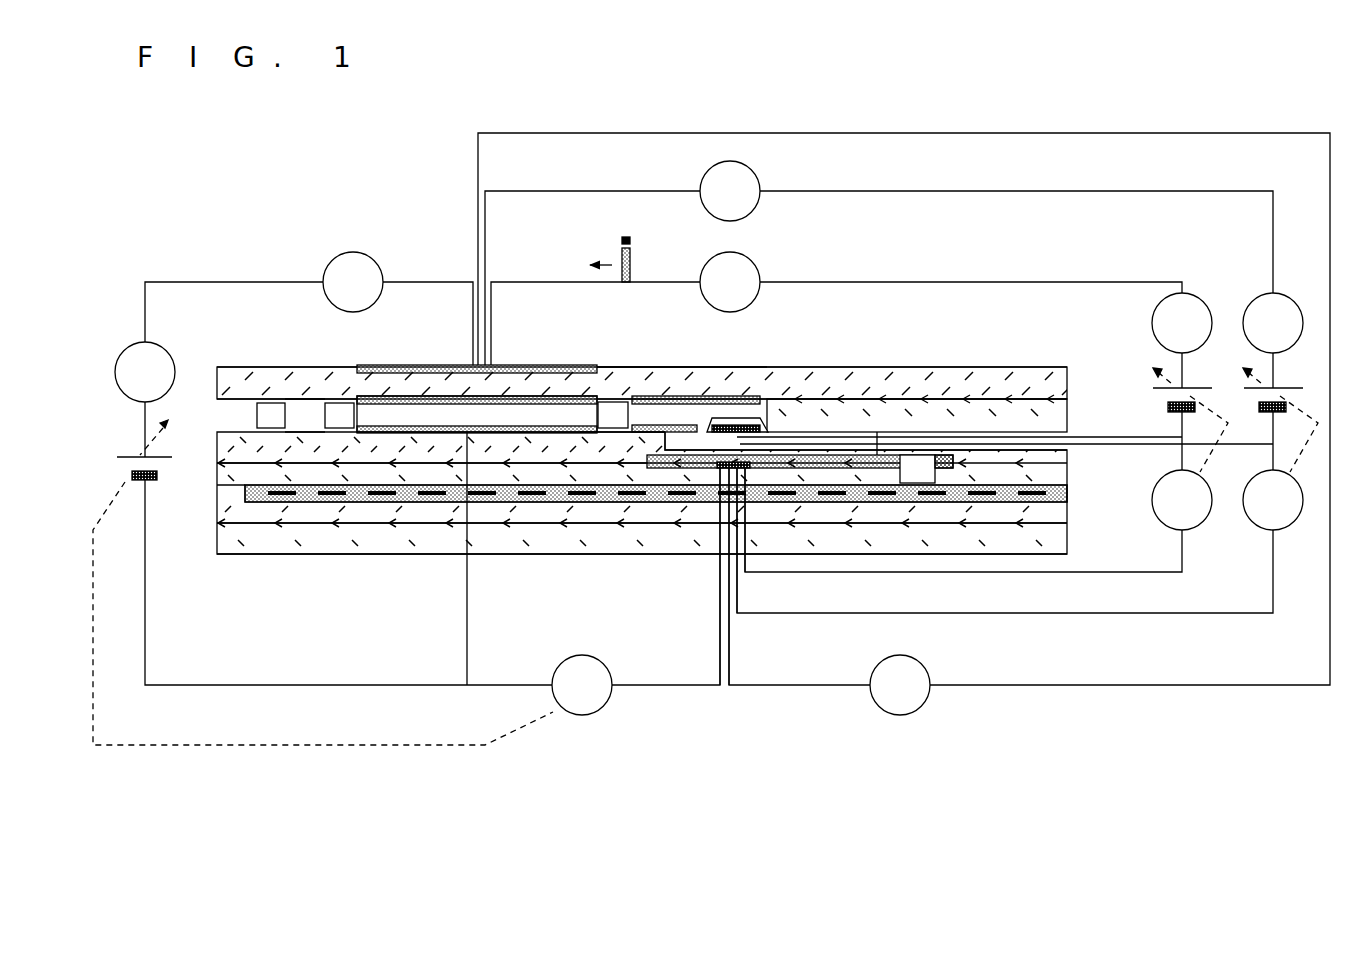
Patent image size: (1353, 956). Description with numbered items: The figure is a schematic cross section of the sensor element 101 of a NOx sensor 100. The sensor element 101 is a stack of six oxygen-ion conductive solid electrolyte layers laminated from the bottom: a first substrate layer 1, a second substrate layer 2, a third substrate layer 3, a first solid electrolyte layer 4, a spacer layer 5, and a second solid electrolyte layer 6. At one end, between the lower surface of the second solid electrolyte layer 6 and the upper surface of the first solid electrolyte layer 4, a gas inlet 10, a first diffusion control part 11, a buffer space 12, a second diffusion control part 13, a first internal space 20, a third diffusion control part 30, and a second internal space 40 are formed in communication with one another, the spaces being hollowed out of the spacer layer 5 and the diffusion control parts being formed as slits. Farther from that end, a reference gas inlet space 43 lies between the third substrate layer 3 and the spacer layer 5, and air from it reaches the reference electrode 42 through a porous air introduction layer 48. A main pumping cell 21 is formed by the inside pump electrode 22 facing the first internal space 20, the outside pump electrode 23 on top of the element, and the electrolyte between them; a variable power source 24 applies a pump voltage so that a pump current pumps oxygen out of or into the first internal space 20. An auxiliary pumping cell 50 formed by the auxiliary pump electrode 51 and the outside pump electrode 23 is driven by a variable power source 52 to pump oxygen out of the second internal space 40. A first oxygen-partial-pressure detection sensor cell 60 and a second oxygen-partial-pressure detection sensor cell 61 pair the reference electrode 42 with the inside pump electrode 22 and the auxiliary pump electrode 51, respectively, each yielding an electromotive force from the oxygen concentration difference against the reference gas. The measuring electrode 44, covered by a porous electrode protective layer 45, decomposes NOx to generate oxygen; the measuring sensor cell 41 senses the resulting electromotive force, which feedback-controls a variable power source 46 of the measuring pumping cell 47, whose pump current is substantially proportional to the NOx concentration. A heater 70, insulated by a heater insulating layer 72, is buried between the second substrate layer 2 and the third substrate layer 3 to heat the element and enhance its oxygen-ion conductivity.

The first substrate layer 1 is at (230, 542).
The second substrate layer 2 is at (230, 510).
The third substrate layer 3 is at (232, 480).
The first solid electrolyte layer 4 is at (230, 447).
The spacer layer 5 is at (1067, 421).
The second solid electrolyte layer 6 is at (1067, 384).
The gas inlet 10 is at (230, 412).
The first diffusion control part 11 is at (270, 412).
The buffer space 12 is at (305, 412).
The second diffusion control part 13 is at (343, 412).
The first internal space 20 is at (383, 412).
The main pumping cell 21 is at (593, 384).
The inside pump electrode 22 is at (420, 426).
The outside pump electrode 23 is at (525, 365).
The variable power source 24 is at (128, 467).
The third diffusion control part 30 is at (614, 402).
The second internal space 40 is at (686, 425).
The measuring sensor cell 41 is at (712, 440).
The reference electrode 42 is at (720, 470).
The reference gas inlet space 43 is at (1053, 455).
The measuring electrode 44 is at (745, 418).
The electrode protective layer 45 is at (720, 418).
The variable power source 46 is at (1196, 388).
The measuring pumping cell 47 is at (781, 383).
The air introduction layer 48 is at (843, 468).
The auxiliary pumping cell 50 is at (641, 384).
The auxiliary pump electrode 51 is at (657, 396).
The variable power source 52 is at (1286, 388).
The first oxygen-partial-pressure detection sensor cell 60 is at (600, 447).
The second oxygen-partial-pressure detection sensor cell 61 is at (640, 447).
The heater 70 is at (289, 502).
The heater insulating layer 72 is at (253, 502).
The NOx sensor 100 is at (214, 191).
The sensor element 101 is at (837, 367).